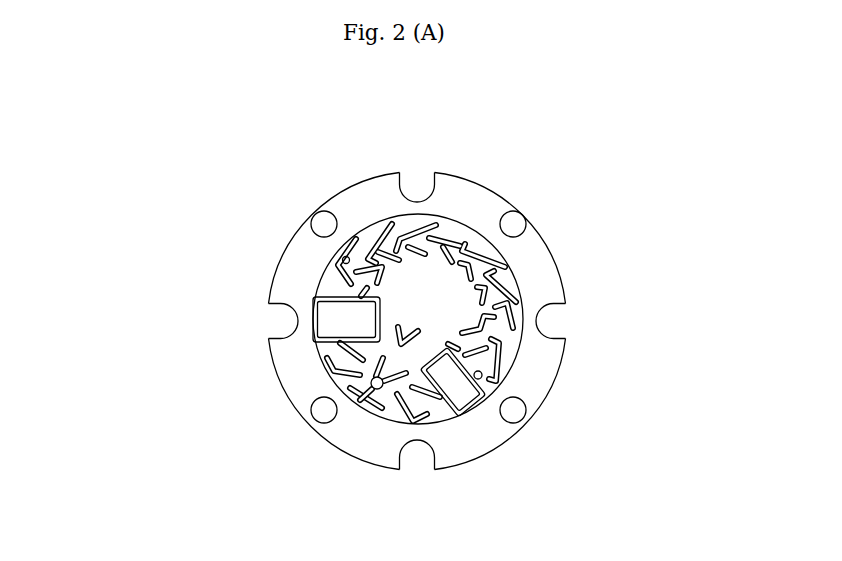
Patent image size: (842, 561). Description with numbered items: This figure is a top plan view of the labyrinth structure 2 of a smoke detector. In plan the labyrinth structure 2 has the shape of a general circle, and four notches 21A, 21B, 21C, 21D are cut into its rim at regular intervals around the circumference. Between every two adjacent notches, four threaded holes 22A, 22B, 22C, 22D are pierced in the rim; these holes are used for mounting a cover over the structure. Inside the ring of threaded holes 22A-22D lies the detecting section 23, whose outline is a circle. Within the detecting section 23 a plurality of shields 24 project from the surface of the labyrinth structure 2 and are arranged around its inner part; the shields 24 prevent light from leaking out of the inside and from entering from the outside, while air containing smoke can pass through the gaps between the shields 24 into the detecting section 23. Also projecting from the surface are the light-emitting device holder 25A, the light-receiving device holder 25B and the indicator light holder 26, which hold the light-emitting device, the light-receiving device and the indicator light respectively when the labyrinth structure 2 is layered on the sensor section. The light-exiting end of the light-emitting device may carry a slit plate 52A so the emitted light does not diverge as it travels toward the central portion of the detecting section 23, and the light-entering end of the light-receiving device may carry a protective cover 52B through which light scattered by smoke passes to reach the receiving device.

The labyrinth structure 2 is at (538, 162).
The notch 21A is at (416, 184).
The notch 21B is at (282, 318).
The notch 21C is at (414, 455).
The notch 21D is at (554, 323).
The threaded hole 22A is at (322, 224).
The threaded hole 22B is at (322, 416).
The threaded hole 22C is at (514, 411).
The threaded hole 22D is at (513, 225).
The detecting section 23 is at (524, 352).
The shields 24 is at (512, 279).
The light-emitting device holder 25A is at (318, 298).
The light-receiving device holder 25B is at (450, 425).
The indicator light holder 26 is at (373, 386).
The slit plate 52A is at (366, 342).
The protective cover 52B is at (433, 358).